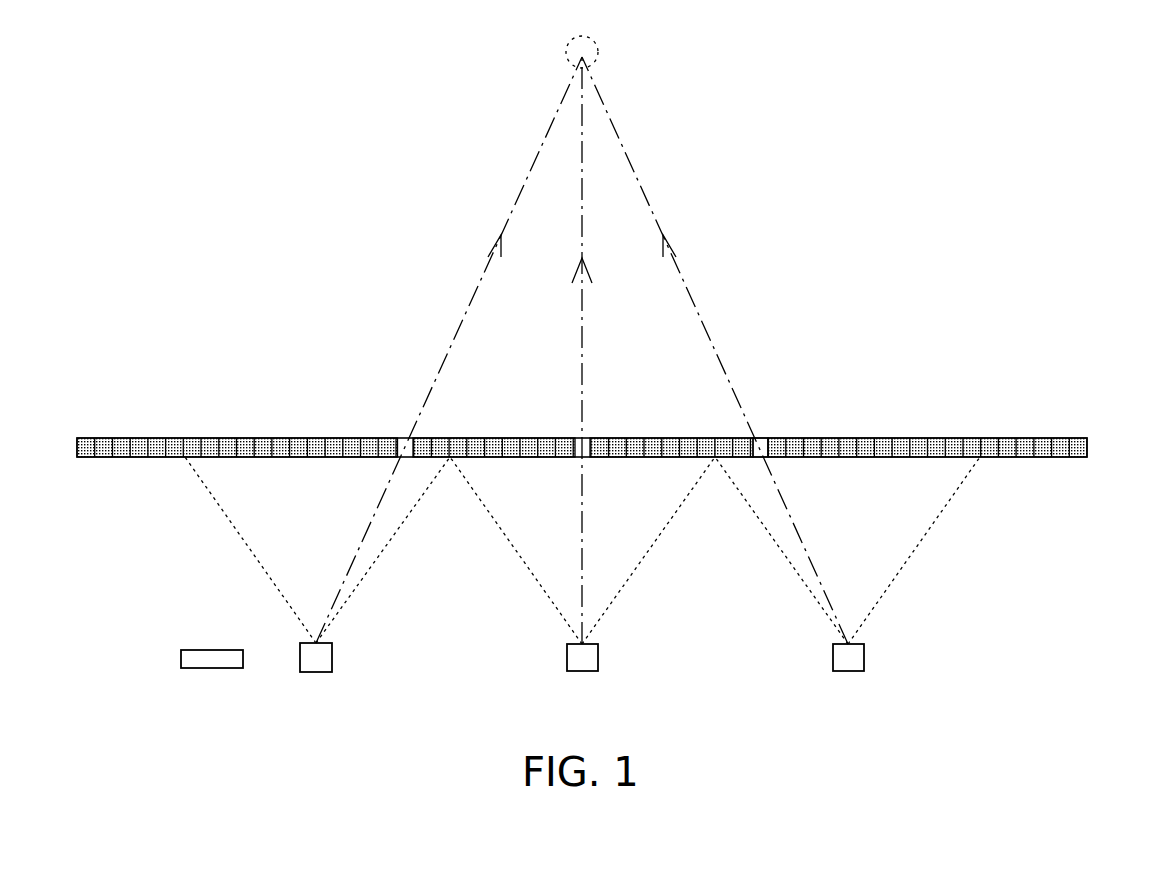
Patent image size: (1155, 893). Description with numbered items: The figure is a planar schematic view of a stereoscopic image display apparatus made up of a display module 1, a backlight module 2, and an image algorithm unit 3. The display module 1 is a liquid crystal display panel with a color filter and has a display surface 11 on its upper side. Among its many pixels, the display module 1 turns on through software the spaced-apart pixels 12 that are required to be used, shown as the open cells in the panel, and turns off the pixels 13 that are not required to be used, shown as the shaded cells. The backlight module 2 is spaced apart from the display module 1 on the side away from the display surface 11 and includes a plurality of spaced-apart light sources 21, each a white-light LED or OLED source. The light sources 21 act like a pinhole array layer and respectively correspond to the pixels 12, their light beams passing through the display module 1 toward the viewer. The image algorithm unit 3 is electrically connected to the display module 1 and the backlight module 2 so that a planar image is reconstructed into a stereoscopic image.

The display module 1 is at (1090, 447).
The display surface 11 is at (120, 438).
The pixels that are required to be used 12 is at (762, 447).
The pixels that are not required to be used 13 is at (936, 446).
The backlight module 2 is at (868, 655).
The light sources 21 is at (848, 660).
The image algorithm unit 3 is at (182, 658).